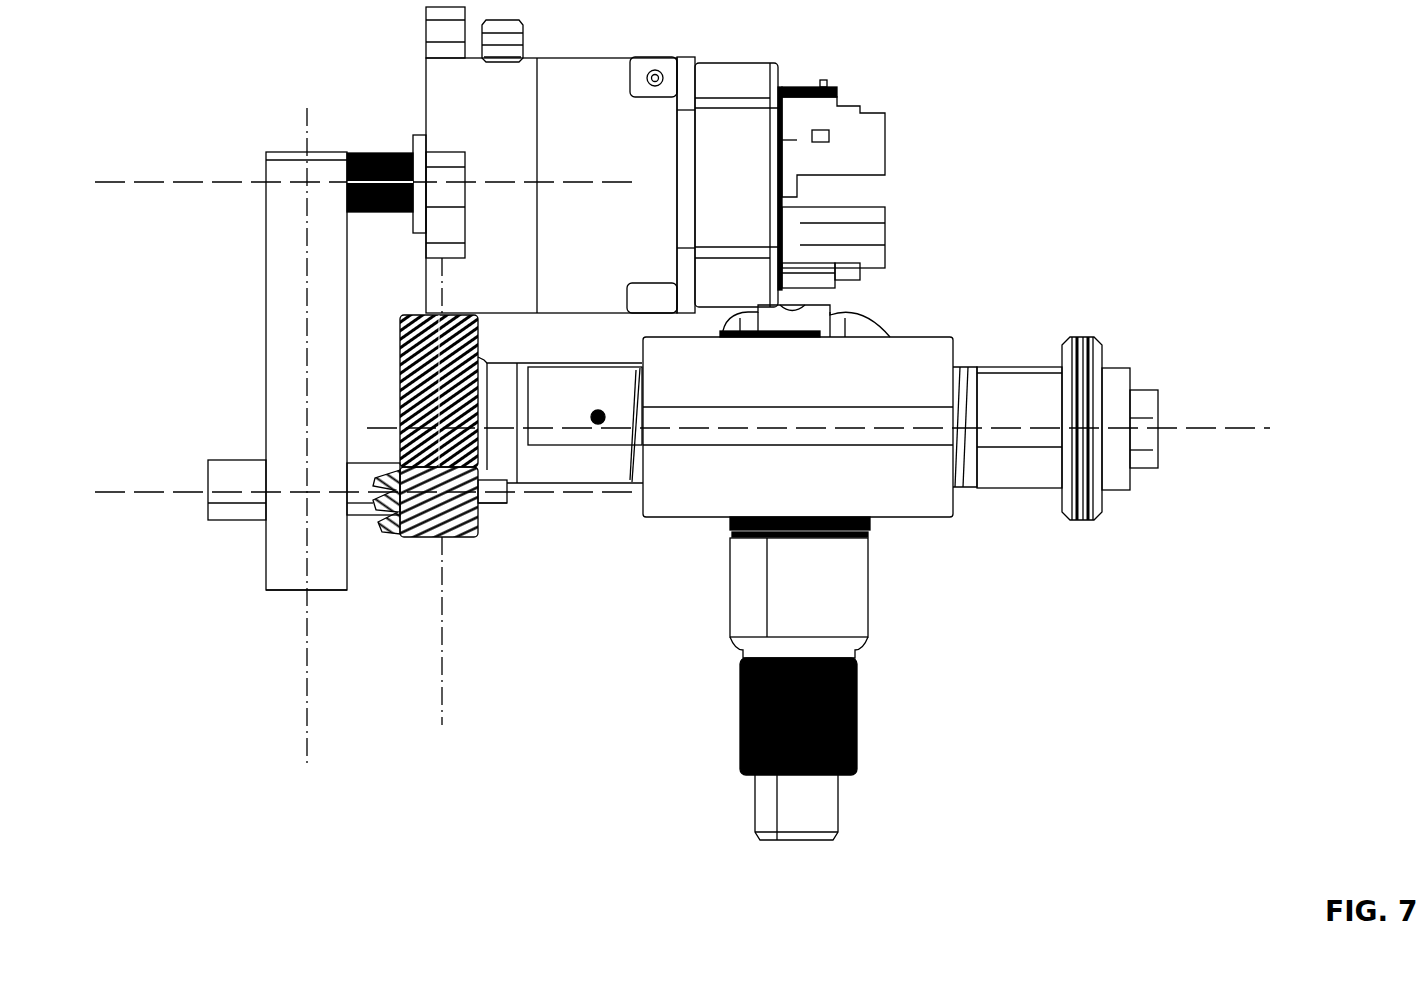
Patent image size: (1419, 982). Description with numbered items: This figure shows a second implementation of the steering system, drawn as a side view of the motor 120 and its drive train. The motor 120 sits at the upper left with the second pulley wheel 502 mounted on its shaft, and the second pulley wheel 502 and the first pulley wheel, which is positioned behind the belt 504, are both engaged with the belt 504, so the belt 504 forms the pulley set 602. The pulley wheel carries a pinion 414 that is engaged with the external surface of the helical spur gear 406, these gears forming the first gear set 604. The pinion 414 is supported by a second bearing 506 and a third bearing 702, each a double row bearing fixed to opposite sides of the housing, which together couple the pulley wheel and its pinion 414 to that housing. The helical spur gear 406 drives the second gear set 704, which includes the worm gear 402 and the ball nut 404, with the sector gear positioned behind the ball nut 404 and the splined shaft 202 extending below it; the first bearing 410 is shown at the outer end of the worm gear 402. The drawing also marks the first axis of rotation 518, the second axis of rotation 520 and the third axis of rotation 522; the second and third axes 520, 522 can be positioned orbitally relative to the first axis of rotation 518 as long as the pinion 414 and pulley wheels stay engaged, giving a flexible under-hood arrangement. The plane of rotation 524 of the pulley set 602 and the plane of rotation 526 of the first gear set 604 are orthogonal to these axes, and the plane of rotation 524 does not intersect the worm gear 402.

The motor 120 is at (546, 130).
The splined shaft 202 is at (858, 667).
The worm gear 402 is at (965, 366).
The ball nut 404 is at (890, 337).
The helical spur gear 406 is at (480, 348).
The first bearing 410 is at (1068, 338).
The pinion 414 is at (482, 507).
The second pulley wheel 502 is at (408, 215).
The belt 504 is at (265, 347).
The second bearing 506 is at (240, 522).
The first axis of rotation 518 is at (1240, 428).
The second axis of rotation 520 is at (100, 492).
The third axis of rotation 522 is at (100, 182).
The plane of rotation of the pulley set 524 is at (305, 738).
The plane of rotation of the first gear set 526 is at (442, 702).
The pulley set 602 is at (282, 603).
The first gear set 604 is at (422, 546).
The third bearing 702 is at (507, 480).
The second gear set 704 is at (698, 525).